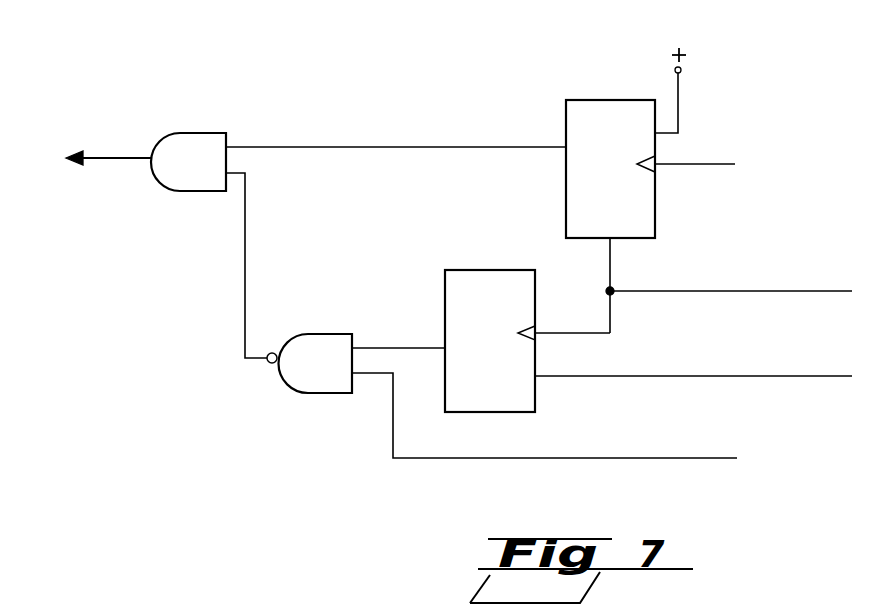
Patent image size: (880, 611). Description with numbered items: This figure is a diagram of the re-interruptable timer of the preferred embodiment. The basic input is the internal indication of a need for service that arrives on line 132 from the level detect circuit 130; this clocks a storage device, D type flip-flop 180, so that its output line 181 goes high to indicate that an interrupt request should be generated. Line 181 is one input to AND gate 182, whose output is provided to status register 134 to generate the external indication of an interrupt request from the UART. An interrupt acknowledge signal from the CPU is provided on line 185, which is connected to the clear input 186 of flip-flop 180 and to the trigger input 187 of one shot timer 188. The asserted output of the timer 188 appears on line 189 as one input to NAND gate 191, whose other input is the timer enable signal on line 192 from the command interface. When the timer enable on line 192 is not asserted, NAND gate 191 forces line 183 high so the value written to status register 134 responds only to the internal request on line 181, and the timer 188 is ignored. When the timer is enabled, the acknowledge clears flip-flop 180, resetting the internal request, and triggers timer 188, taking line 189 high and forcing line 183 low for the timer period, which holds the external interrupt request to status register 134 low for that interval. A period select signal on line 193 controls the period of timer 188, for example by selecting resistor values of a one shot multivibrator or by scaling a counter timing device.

The level detect circuit 130 is at (787, 207).
The line 132 is at (718, 164).
The status register 134 is at (90, 199).
The D type flip-flop 180 is at (603, 100).
The output line 181 is at (450, 147).
The AND gate 182 is at (193, 133).
The line 183 is at (246, 248).
The line 185 is at (645, 291).
The clear input 186 is at (612, 243).
The trigger input 187 is at (540, 333).
The one shot timer 188 is at (490, 270).
The line 189 is at (385, 348).
The NAND gate 191 is at (313, 393).
The line 192 is at (415, 458).
The line 193 is at (608, 376).